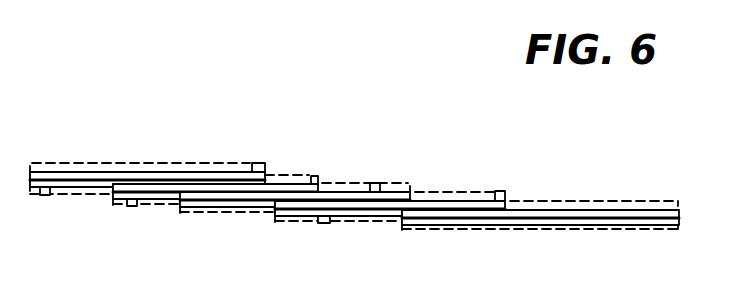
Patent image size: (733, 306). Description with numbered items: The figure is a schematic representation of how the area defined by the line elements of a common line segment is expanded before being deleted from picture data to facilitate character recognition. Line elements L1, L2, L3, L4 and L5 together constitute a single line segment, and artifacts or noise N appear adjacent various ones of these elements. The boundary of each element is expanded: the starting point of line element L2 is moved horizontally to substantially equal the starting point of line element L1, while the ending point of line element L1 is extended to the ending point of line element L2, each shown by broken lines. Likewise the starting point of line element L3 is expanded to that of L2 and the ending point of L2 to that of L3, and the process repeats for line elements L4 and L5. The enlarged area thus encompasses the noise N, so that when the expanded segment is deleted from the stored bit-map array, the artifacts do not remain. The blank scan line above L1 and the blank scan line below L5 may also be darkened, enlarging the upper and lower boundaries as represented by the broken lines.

The line element L1 is at (256, 163).
The line element L2 is at (313, 176).
The line element L3 is at (411, 192).
The line element L4 is at (499, 191).
The line element L5 is at (680, 213).
The noise N is at (375, 183).